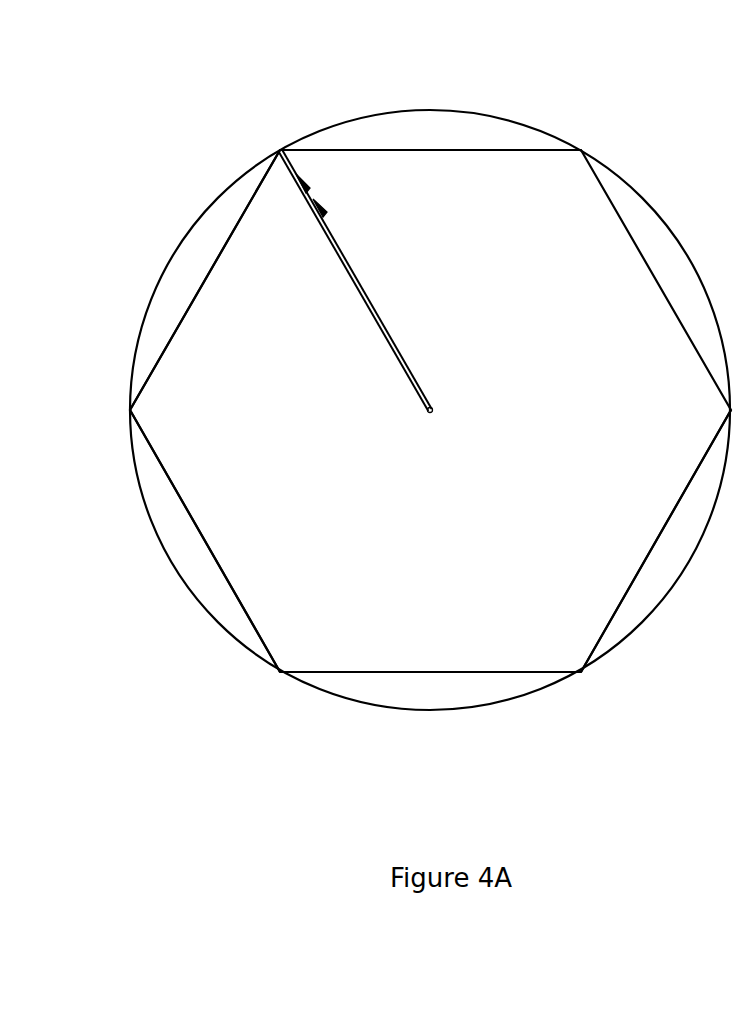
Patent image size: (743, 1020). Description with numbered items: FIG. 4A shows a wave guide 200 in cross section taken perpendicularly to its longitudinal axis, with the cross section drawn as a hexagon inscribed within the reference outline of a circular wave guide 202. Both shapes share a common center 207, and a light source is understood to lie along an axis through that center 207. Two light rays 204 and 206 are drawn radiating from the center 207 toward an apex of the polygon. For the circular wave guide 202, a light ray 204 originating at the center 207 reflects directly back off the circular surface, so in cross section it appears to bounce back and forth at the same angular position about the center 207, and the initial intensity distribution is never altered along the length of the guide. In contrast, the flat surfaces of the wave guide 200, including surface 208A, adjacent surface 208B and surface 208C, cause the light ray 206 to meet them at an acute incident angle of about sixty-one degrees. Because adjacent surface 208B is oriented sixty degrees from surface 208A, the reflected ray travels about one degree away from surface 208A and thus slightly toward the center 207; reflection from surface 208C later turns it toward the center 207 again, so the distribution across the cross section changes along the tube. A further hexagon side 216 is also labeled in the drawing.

The wave guide 200 is at (190, 522).
The circular wave guide 202 is at (170, 268).
The light ray 204 is at (308, 205).
The light ray 206 is at (298, 178).
The center 207 is at (433, 410).
The surface 208A is at (437, 148).
The surface 208B is at (222, 245).
The surface 208C is at (243, 613).
The hexagon side 216 is at (607, 635).